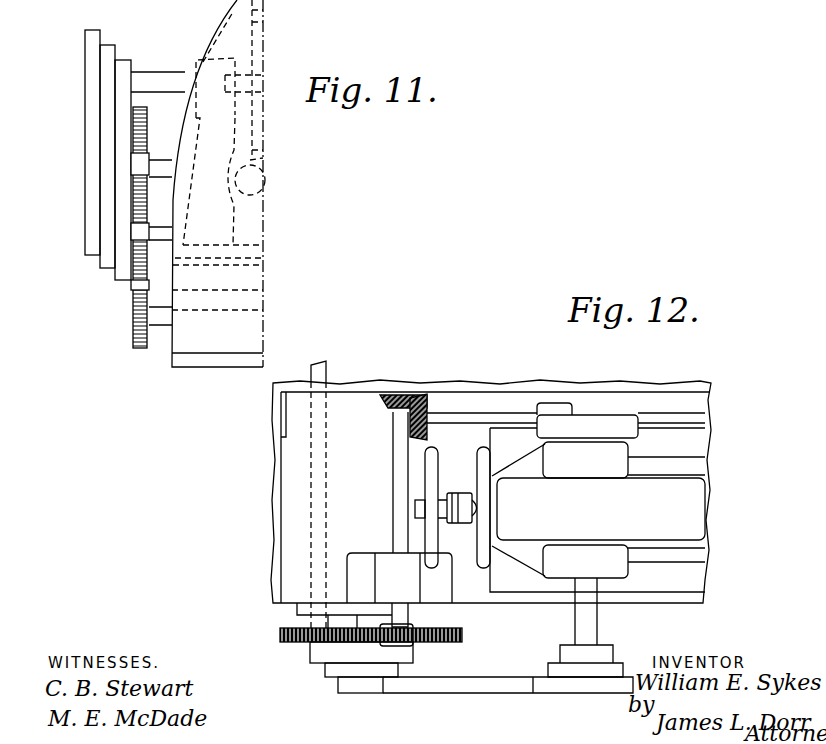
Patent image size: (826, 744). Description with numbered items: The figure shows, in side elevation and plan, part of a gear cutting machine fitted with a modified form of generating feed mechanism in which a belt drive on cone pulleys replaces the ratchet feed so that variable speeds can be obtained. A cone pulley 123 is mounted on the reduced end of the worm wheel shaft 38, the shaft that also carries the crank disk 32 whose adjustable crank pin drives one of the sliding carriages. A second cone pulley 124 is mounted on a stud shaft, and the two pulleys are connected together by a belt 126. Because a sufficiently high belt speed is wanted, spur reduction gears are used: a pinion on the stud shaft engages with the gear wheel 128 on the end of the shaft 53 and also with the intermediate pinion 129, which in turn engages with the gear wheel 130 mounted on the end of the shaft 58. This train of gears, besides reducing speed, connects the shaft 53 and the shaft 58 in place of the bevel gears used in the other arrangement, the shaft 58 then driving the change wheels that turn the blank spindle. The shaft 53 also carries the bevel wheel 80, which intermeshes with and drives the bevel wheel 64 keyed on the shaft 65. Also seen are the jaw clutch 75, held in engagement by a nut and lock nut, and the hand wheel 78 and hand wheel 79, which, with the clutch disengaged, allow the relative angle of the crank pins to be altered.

In FIG. 12, the crank disk 32 is at (598, 413).
In FIG. 11, the worm wheel shaft 38 is at (138, 72).
In FIG. 12, the worm wheel shaft 38 is at (612, 434).
In FIG. 12, the shaft 53 is at (393, 476).
In FIG. 12, the shaft 58 is at (313, 492).
In FIG. 12, the bevel wheel 64 is at (412, 434).
In FIG. 12, the shaft 65 is at (459, 417).
In FIG. 12, the jaw clutch 75 is at (473, 523).
In FIG. 12, the hand wheel 78 is at (481, 467).
In FIG. 12, the hand wheel 79 is at (427, 490).
In FIG. 12, the bevel wheel 80 is at (386, 400).
In FIG. 11, the cone pulley 123 is at (86, 57).
In FIG. 12, the cone pulley 123 is at (590, 694).
In FIG. 12, the second cone pulley 124 is at (333, 676).
In FIG. 11, the belt 126 is at (86, 180).
In FIG. 12, the belt 126 is at (430, 688).
In FIG. 11, the gear wheel 128 is at (131, 134).
In FIG. 12, the gear wheel 128 is at (373, 645).
In FIG. 12, the intermediate pinion 129 is at (335, 643).
In FIG. 12, the gear wheel 130 is at (290, 642).